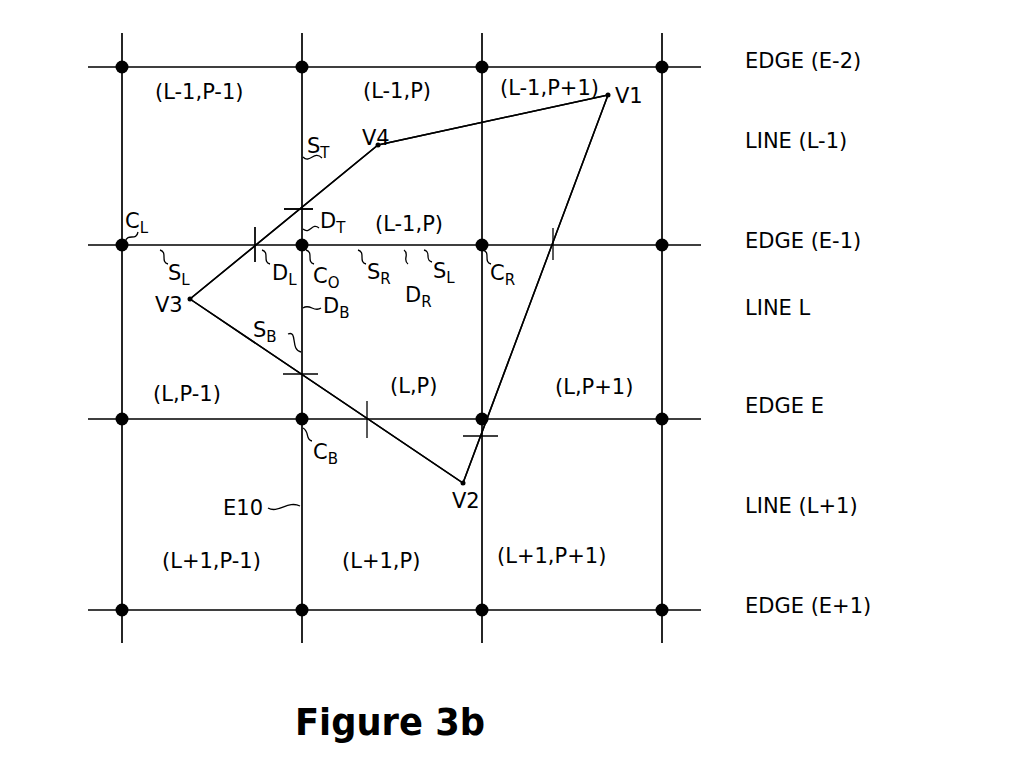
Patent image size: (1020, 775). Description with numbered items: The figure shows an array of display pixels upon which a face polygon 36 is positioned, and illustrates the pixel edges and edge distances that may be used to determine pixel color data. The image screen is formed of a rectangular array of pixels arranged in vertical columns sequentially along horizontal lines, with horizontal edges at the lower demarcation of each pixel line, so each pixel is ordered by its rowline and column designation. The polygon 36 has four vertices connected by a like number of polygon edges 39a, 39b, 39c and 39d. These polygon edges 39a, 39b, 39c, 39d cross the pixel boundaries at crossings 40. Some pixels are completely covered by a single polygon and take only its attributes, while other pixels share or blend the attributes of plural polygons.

The crossings 40 is at (246, 240).
The polygon 36 is at (577, 182).
The polygon edge 39a is at (594, 134).
The polygon edge 39b is at (428, 462).
The polygon edge 39c is at (362, 158).
The polygon edge 39d is at (512, 116).